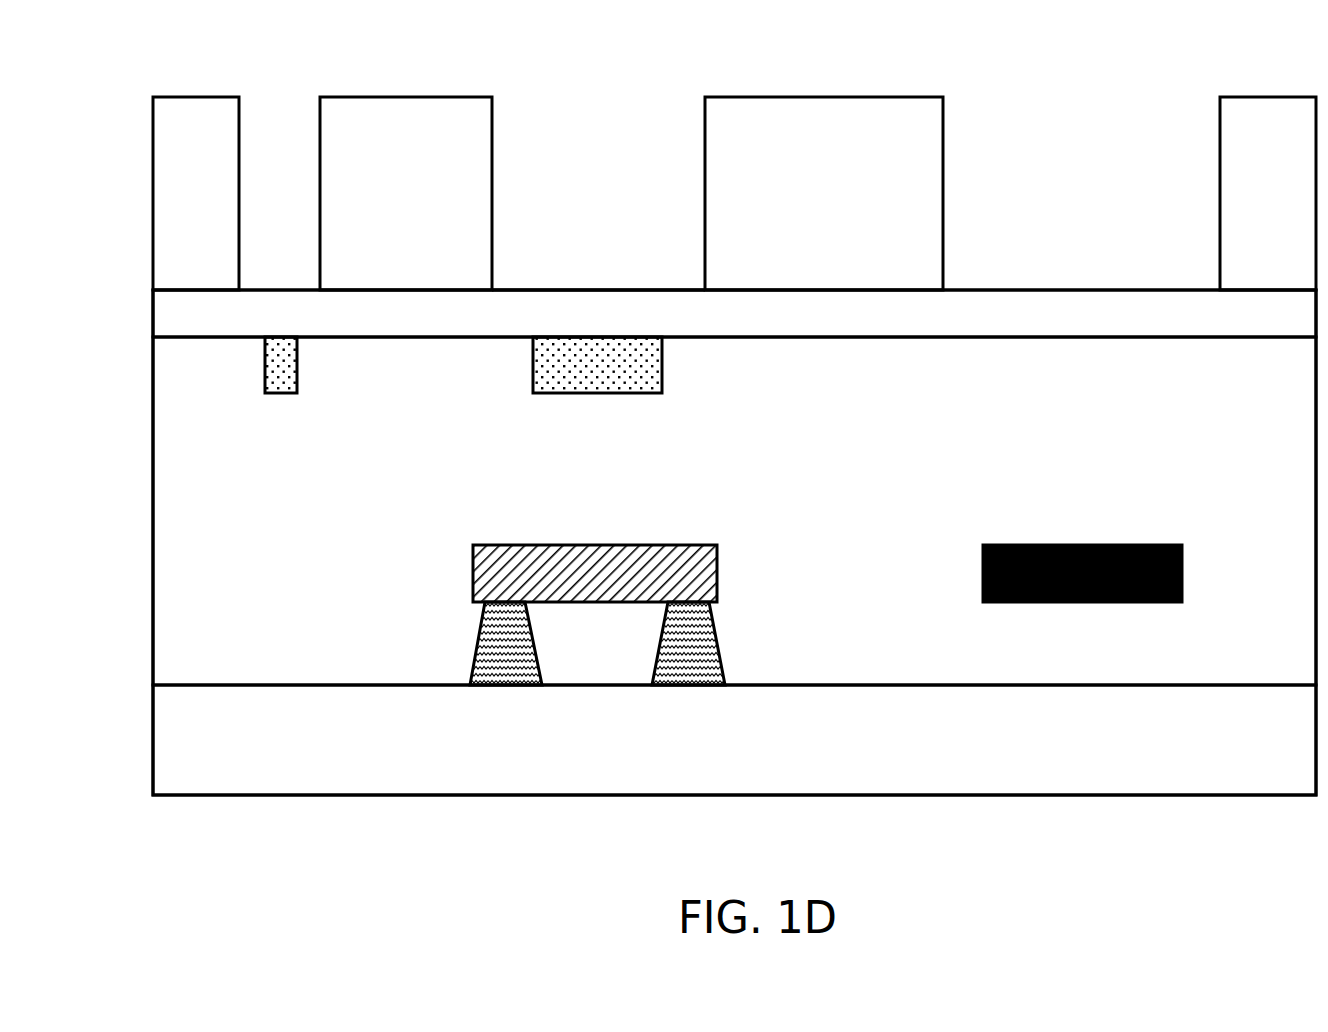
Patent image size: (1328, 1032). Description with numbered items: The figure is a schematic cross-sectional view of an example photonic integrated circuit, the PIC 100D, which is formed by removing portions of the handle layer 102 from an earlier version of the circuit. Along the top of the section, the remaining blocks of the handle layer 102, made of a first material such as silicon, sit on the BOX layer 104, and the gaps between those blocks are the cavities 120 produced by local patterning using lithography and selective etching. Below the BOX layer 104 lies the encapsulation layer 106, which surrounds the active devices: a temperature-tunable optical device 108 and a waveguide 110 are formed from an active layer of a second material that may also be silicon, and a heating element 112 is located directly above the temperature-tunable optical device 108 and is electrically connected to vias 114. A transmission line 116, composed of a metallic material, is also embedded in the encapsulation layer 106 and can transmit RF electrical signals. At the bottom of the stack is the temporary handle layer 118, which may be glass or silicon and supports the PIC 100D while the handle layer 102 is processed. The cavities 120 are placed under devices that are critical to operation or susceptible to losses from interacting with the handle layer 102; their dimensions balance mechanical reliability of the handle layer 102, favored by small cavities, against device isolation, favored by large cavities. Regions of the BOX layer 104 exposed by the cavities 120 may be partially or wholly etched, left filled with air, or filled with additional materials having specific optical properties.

The PIC 100D is at (786, 54).
The handle layer 102 is at (218, 212).
The BOX layer 104 is at (828, 327).
The encapsulation layer 106 is at (1307, 375).
The temperature-tunable optical device 108 is at (663, 393).
The waveguide 110 is at (297, 393).
The heating element 112 is at (712, 603).
The vias 114 is at (527, 633).
The transmission line 116 is at (1083, 603).
The temporary handle layer 118 is at (1203, 788).
The cavities 120 is at (588, 172).